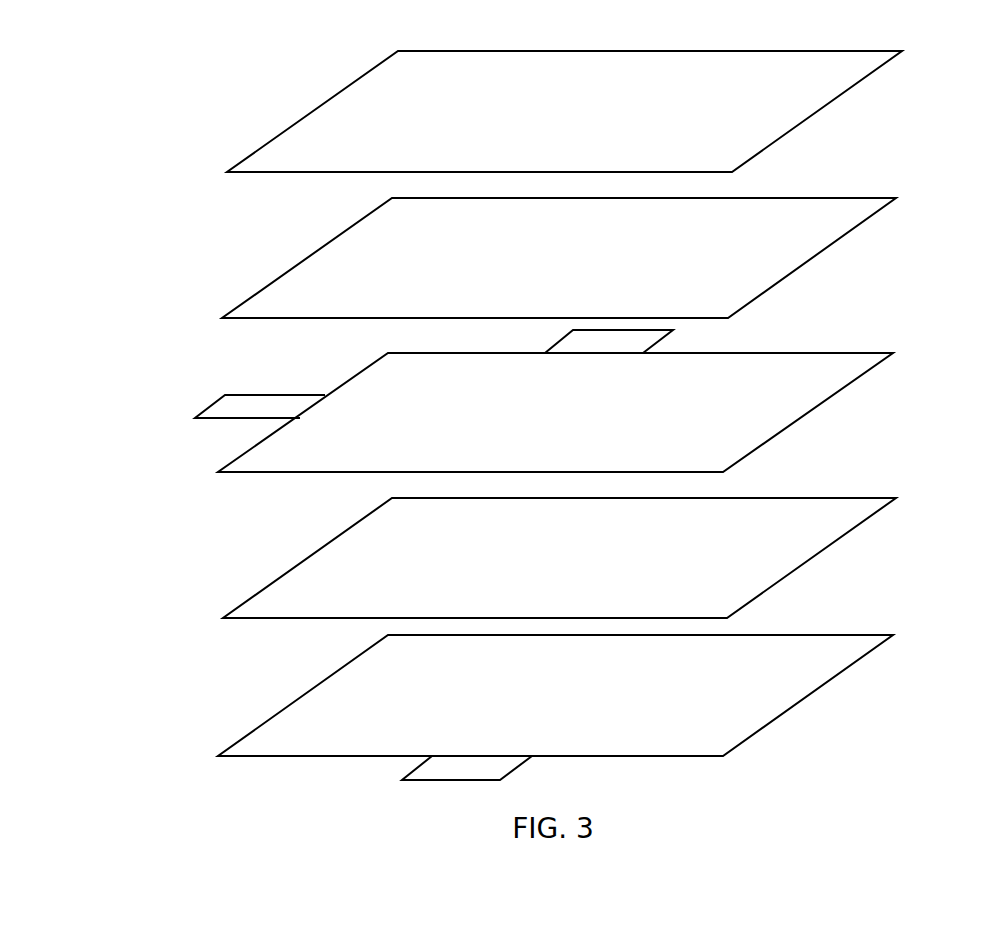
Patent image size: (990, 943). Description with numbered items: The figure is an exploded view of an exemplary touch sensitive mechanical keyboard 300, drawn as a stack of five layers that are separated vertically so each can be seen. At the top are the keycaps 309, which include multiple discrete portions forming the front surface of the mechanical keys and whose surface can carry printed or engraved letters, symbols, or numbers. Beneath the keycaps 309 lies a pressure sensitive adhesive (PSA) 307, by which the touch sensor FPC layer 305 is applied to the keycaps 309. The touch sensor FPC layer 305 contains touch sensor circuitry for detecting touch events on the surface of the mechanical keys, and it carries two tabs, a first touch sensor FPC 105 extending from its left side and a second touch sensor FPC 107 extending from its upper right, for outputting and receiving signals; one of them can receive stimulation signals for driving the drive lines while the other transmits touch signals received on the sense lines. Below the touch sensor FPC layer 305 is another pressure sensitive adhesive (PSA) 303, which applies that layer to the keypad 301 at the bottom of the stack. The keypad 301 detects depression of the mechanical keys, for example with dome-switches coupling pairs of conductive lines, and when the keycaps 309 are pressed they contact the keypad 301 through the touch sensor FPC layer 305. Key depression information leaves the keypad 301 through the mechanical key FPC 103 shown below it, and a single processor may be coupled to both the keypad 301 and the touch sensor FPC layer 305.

The touch sensitive mechanical keyboard 300 is at (145, 121).
The keycaps 309 is at (564, 111).
The pressure sensitive adhesive (PSA) 307 is at (559, 258).
The touch sensor FPC layer 305 is at (555, 412).
The pressure sensitive adhesive (PSA) 303 is at (559, 558).
The keypad 301 is at (555, 695).
The second touch sensor FPC 107 is at (655, 343).
The first touch sensor FPC 105 is at (225, 420).
The mechanical key FPC 103 is at (402, 781).